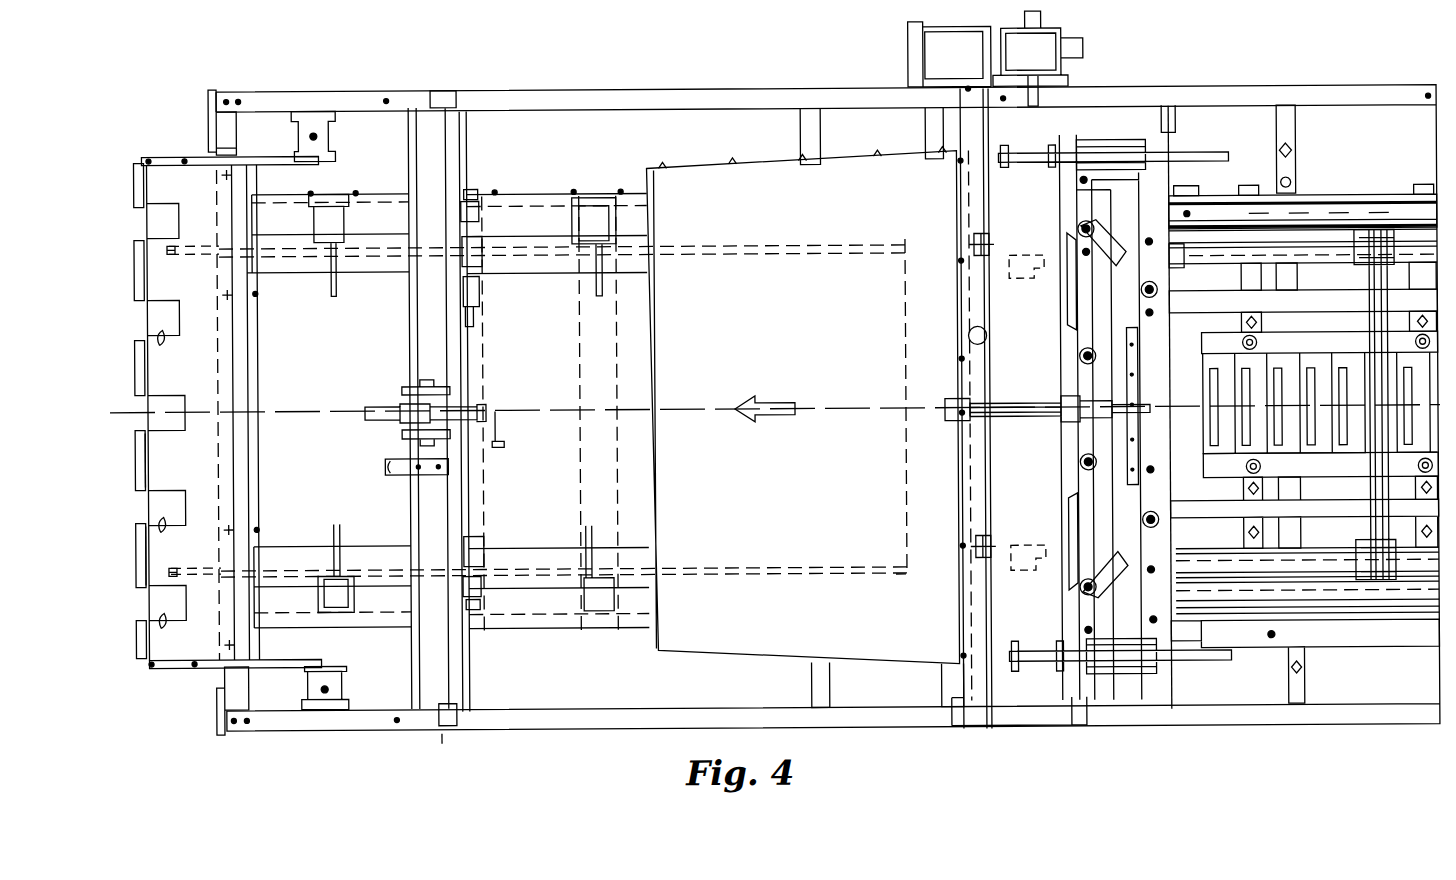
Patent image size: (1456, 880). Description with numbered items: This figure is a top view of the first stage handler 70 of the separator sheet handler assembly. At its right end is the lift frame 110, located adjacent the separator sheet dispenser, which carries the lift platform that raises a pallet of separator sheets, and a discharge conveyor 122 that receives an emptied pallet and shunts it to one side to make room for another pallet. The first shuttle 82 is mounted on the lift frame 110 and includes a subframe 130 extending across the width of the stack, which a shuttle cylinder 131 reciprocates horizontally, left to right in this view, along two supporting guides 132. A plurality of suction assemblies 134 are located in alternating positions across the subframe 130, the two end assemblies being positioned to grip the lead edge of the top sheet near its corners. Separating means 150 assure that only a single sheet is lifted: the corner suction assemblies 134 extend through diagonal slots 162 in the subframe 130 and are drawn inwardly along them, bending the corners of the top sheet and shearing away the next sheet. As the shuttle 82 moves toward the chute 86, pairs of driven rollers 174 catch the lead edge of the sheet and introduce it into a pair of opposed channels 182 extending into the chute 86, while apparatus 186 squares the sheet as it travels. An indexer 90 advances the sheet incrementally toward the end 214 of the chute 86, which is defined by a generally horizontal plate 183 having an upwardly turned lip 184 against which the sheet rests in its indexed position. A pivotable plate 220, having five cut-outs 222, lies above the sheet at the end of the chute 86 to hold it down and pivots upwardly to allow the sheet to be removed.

The first stage handler 70 is at (769, 82).
The first shuttle 82 is at (1170, 120).
The chute 86 is at (815, 199).
The indexer 90 is at (391, 385).
The lift frame 110 is at (1028, 705).
The discharge conveyor 122 is at (1376, 292).
The subframe 130 is at (1110, 188).
The shuttle cylinder 131 is at (958, 406).
The supporting guides 132 is at (1193, 150).
The suction assemblies 134 is at (1081, 227).
The separating means 150 is at (1086, 268).
The slots 162 is at (1103, 248).
The driven rollers 174 is at (1010, 262).
The opposed channels 182 is at (512, 212).
The horizontal plate 183 is at (150, 600).
The lip 184 is at (148, 465).
The squaring apparatus 186 is at (499, 486).
The end of the chute 214 is at (155, 296).
The pivotable plate 220 is at (220, 380).
The cut-outs 222 is at (158, 200).